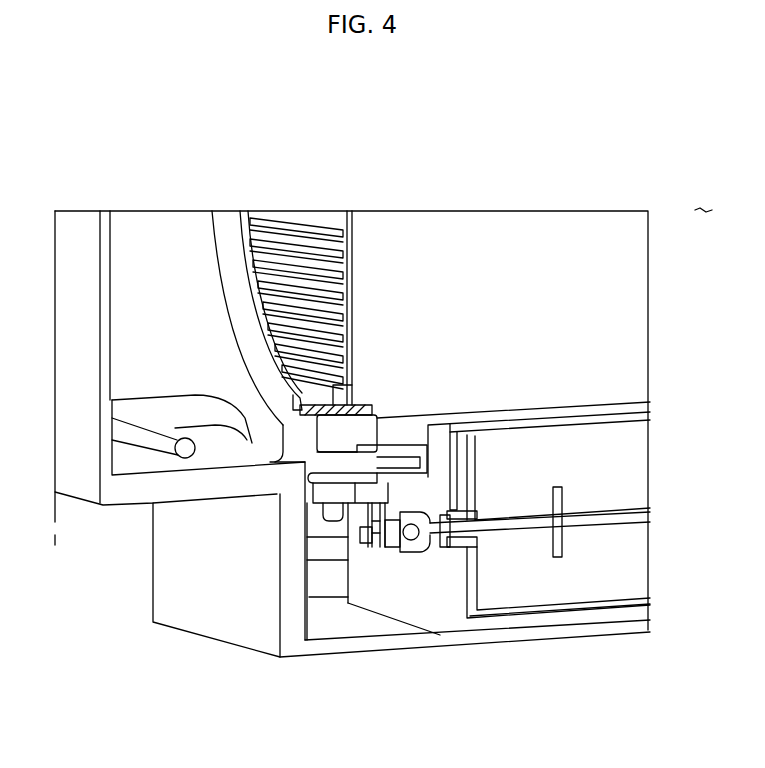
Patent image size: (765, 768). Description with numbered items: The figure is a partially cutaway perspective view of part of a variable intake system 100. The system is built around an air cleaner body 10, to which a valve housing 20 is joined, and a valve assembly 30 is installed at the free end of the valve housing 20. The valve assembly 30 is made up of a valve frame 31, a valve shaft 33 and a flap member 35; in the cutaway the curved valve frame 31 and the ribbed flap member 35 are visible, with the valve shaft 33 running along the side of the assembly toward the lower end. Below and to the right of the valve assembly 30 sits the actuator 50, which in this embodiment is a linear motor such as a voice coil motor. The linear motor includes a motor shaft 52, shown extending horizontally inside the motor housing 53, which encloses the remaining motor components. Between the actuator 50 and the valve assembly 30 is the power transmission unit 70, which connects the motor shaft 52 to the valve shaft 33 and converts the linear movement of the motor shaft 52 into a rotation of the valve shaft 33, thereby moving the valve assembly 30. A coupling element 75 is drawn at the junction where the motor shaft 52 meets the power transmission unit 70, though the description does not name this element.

The variable intake system 100 is at (408, 106).
The air cleaner body 10 is at (125, 497).
The valve housing 20 is at (596, 403).
The valve assembly 30 is at (297, 297).
The valve frame 31 is at (220, 247).
The valve shaft 33 is at (357, 322).
The flap member 35 is at (281, 218).
The actuator 50 is at (402, 622).
The motor shaft 52 is at (527, 527).
The motor housing 53 is at (616, 610).
The power transmission unit 70 is at (375, 560).
The coupling 75 is at (422, 557).